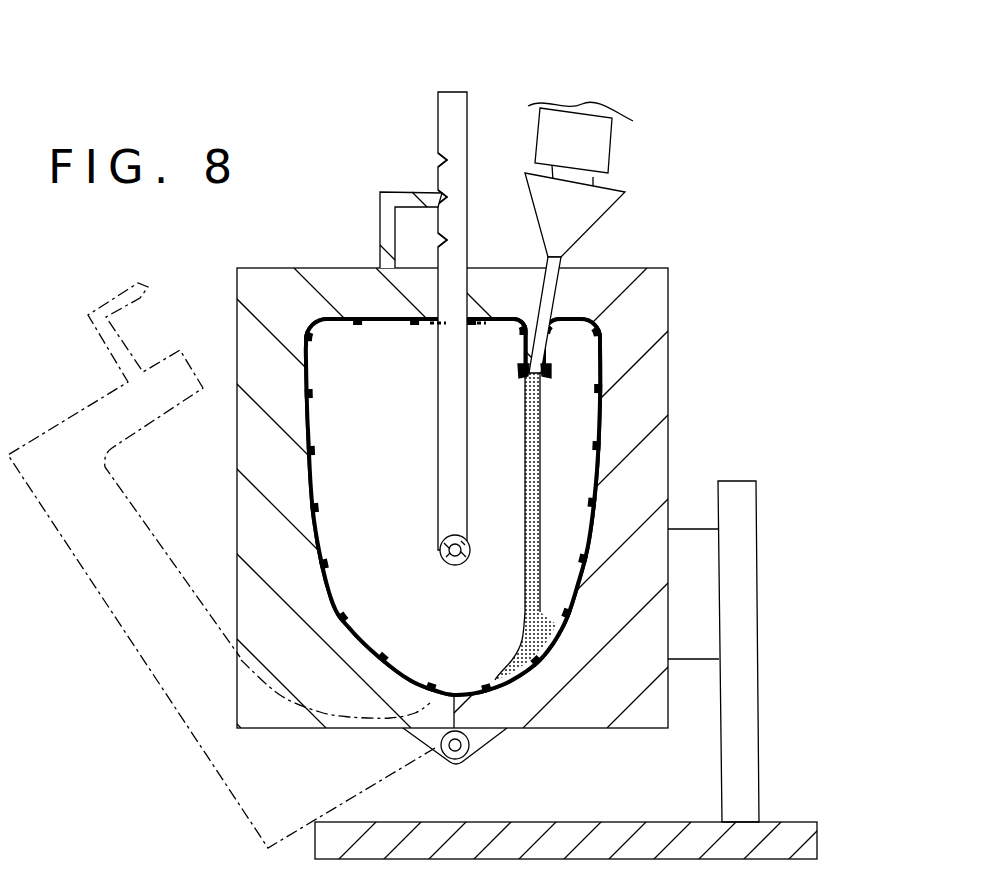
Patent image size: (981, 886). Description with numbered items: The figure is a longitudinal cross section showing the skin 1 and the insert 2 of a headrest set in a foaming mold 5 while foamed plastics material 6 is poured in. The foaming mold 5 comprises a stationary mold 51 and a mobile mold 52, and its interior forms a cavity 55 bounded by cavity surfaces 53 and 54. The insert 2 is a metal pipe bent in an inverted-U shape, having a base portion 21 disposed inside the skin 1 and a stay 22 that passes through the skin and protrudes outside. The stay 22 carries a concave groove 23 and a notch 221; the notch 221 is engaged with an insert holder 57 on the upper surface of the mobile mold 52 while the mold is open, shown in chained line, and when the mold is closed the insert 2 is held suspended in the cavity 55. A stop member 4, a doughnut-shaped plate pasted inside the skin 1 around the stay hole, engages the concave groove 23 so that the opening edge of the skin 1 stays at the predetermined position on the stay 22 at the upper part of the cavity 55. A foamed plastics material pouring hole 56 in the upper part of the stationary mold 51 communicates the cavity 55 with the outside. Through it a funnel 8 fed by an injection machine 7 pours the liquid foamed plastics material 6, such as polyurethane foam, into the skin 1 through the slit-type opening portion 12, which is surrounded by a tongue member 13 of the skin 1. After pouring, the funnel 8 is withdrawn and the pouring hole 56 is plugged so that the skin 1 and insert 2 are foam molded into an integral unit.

The skin 1 is at (374, 507).
The insert 2 is at (451, 293).
The stay 22 is at (451, 293).
The notch 221 is at (500, 157).
The concave groove 23 is at (449, 334).
The stop member 4 is at (437, 330).
The foaming mold 5 is at (490, 443).
The stationary mold 51 is at (668, 436).
The mobile mold 52 is at (238, 465).
The cavity surface 53 is at (593, 433).
The cavity surface 54 is at (355, 618).
The cavity 55 is at (392, 463).
The foamed plastics material pouring hole 56 is at (558, 293).
The insert holder 57 is at (380, 207).
The foamed plastics material 6 is at (524, 600).
The injection machine 7 is at (612, 139).
The funnel 8 is at (626, 191).
The opening portion 12 is at (504, 526).
The tongue member 13 is at (522, 362).
The base portion 21 is at (441, 552).